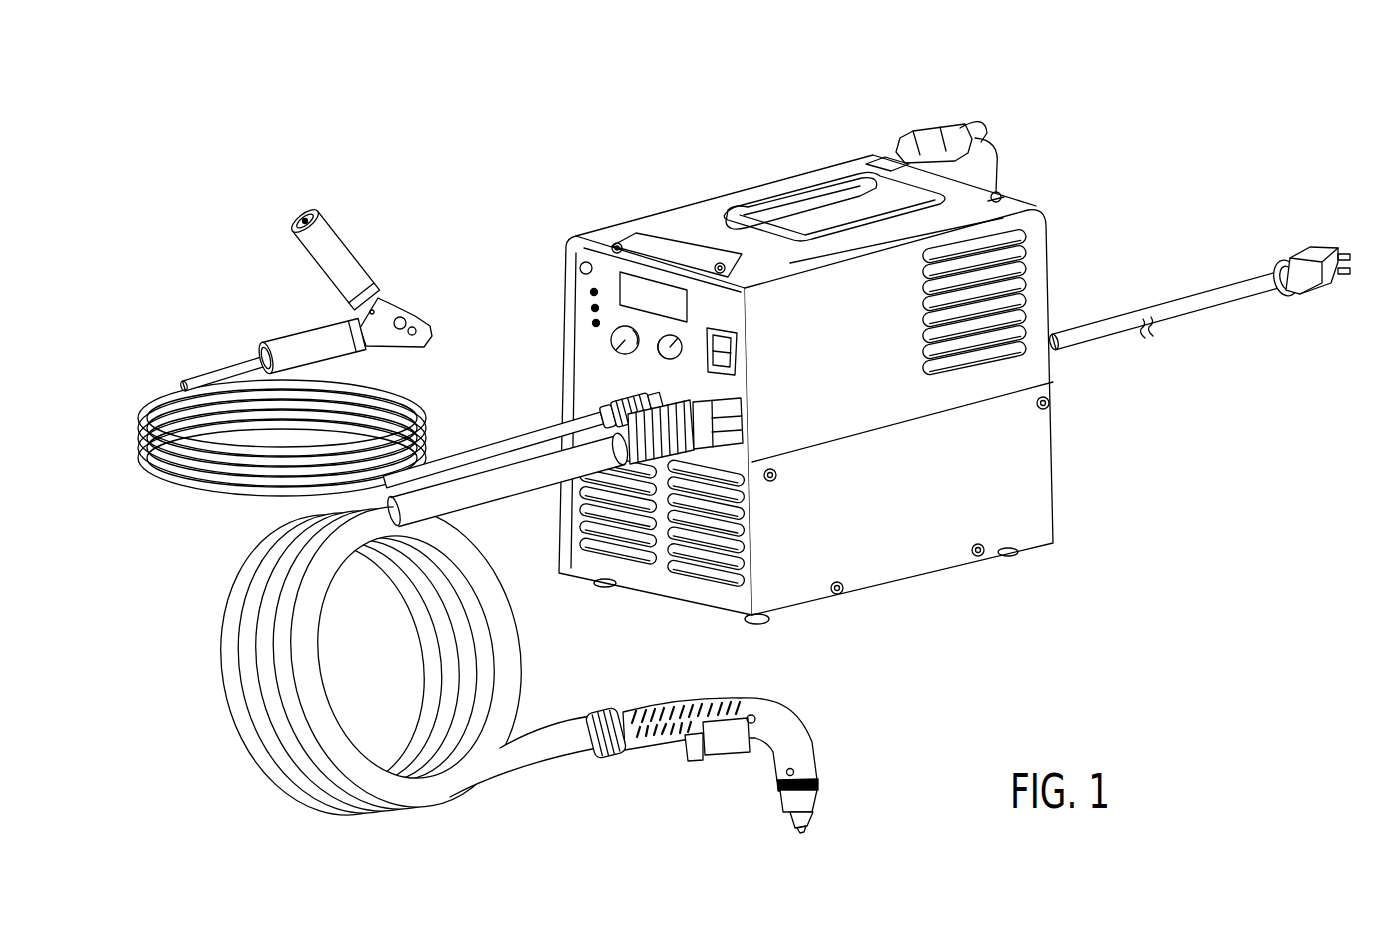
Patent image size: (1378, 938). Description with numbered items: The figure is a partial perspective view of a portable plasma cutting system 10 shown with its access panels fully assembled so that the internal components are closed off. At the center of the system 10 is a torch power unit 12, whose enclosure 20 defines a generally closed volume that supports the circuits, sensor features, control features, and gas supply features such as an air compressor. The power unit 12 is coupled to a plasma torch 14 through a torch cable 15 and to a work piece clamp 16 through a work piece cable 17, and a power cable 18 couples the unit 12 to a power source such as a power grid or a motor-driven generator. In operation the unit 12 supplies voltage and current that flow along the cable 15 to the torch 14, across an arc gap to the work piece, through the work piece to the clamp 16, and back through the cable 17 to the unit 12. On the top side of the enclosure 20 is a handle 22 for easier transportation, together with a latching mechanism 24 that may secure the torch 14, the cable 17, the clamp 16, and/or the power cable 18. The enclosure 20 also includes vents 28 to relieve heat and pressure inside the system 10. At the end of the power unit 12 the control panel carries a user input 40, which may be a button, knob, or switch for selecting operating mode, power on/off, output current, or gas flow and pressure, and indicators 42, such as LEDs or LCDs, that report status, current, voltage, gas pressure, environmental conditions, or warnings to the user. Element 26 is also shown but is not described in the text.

The plasma cutting system 10 is at (927, 61).
The torch power unit 12 is at (1067, 192).
The plasma torch 14 is at (817, 701).
The torch cable 15 is at (513, 637).
The work piece clamp 16 is at (405, 243).
The work piece cable 17 is at (427, 413).
The power cable 18 is at (1178, 310).
The enclosure 20 is at (683, 206).
The handle 22 is at (801, 238).
The latching mechanism 24 is at (948, 127).
The strap attachment terminal 26 is at (978, 198).
The vents 28 is at (1033, 294).
The user input 40 is at (737, 350).
The indicators 42 is at (597, 262).